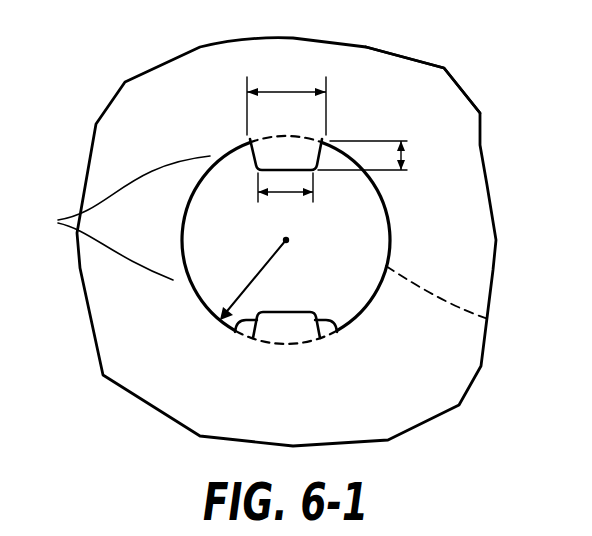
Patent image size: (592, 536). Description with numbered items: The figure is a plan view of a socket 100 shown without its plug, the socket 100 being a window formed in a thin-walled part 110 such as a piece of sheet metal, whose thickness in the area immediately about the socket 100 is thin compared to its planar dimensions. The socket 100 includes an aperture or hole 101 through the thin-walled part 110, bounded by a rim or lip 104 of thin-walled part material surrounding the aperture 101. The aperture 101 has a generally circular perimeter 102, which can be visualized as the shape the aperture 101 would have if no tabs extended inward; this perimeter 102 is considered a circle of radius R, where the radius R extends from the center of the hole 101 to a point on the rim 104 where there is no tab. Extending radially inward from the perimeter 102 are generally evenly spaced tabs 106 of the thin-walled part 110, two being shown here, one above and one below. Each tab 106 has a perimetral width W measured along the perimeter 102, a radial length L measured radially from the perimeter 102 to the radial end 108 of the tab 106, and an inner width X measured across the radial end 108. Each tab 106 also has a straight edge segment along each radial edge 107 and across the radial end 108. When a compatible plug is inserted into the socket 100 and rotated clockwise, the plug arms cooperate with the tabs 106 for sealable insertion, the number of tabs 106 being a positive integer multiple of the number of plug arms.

The socket 100 is at (177, 115).
The thin-walled part 110 is at (401, 105).
The perimeter 102 is at (491, 320).
The rim 104 is at (112, 218).
The aperture 101 is at (347, 293).
The radial end 108 is at (273, 172).
The tabs 106 is at (285, 327).
The radial edge 107 is at (233, 336).
The perimetral width W is at (287, 92).
The radial length L is at (405, 157).
The inner width X is at (285, 194).
The radius R is at (248, 287).